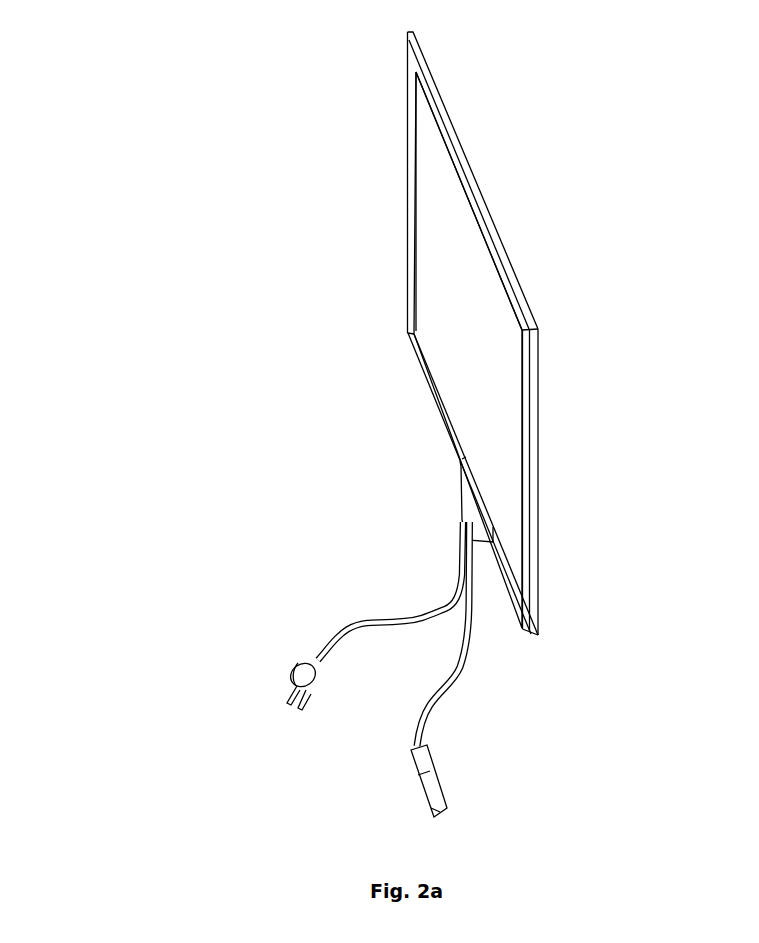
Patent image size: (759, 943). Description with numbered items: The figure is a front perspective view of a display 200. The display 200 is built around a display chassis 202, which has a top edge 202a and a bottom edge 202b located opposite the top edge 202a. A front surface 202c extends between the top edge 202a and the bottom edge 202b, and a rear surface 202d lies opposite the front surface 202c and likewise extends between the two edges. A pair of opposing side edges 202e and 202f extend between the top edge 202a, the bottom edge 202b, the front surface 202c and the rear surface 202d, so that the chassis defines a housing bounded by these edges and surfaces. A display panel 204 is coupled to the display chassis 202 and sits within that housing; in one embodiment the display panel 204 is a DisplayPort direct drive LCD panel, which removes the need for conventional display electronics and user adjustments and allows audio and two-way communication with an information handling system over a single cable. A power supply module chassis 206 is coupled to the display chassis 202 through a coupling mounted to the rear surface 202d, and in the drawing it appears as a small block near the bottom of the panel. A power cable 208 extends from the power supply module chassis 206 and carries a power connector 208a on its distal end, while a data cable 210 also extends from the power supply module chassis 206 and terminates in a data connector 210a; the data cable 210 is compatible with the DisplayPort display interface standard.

The display 200 is at (180, 261).
The display chassis 202 is at (408, 334).
The top edge 202a is at (475, 190).
The bottom edge 202b is at (442, 418).
The front surface 202c is at (497, 275).
The rear surface 202d is at (525, 298).
The side edge 202e is at (535, 380).
The side edge 202f is at (407, 182).
The display panel 204 is at (452, 310).
The power supply module chassis 206 is at (463, 485).
The power cable 208 is at (383, 618).
The power connector 208a is at (287, 673).
The data cable 210 is at (468, 655).
The data connector 210a is at (433, 783).